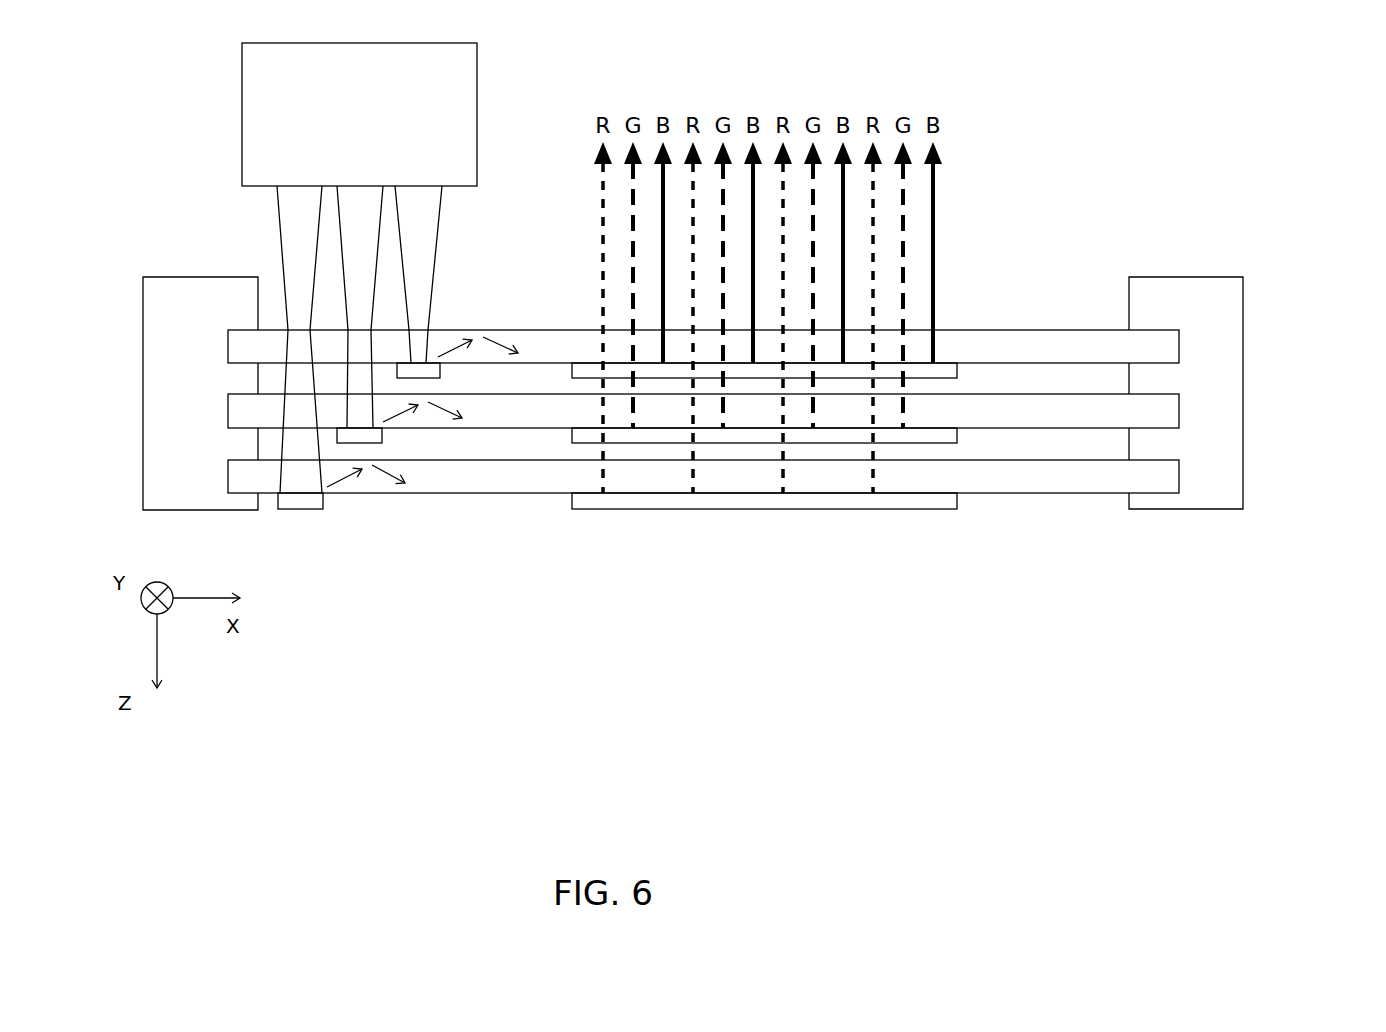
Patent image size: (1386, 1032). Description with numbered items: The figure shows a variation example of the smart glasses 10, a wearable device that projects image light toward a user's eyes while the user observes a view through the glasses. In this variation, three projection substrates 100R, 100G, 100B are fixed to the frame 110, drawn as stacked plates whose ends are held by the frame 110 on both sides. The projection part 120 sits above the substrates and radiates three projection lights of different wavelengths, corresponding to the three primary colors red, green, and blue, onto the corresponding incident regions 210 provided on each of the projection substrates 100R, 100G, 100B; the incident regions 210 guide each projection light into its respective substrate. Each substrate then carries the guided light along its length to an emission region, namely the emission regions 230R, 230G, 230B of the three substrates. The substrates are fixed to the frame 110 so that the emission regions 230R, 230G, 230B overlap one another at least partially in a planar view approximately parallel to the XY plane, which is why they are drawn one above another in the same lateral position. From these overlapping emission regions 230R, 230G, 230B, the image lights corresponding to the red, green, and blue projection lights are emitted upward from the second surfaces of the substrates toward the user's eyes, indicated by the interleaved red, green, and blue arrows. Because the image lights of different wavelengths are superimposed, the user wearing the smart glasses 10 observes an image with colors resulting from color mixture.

The smart glasses 10 is at (1142, 123).
The frame 110 is at (185, 277).
The projection part 120 is at (477, 102).
The projection substrate 100B is at (1179, 347).
The projection substrate 100G is at (1179, 411).
The projection substrate 100R is at (1179, 477).
The incident region 210 is at (310, 509).
The emission region 230R is at (810, 509).
The emission region 230G is at (890, 443).
The emission region 230B is at (937, 378).